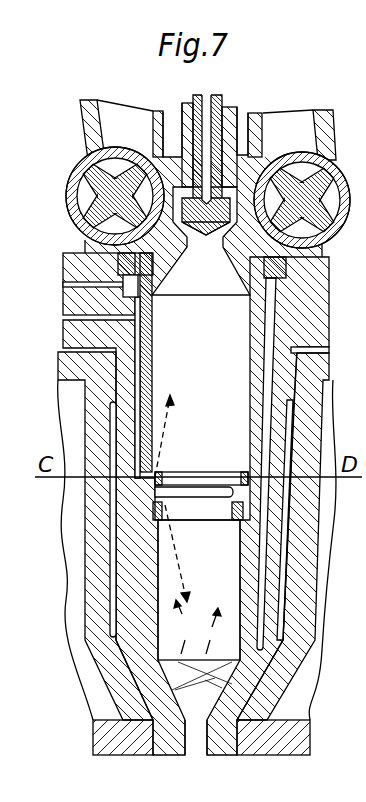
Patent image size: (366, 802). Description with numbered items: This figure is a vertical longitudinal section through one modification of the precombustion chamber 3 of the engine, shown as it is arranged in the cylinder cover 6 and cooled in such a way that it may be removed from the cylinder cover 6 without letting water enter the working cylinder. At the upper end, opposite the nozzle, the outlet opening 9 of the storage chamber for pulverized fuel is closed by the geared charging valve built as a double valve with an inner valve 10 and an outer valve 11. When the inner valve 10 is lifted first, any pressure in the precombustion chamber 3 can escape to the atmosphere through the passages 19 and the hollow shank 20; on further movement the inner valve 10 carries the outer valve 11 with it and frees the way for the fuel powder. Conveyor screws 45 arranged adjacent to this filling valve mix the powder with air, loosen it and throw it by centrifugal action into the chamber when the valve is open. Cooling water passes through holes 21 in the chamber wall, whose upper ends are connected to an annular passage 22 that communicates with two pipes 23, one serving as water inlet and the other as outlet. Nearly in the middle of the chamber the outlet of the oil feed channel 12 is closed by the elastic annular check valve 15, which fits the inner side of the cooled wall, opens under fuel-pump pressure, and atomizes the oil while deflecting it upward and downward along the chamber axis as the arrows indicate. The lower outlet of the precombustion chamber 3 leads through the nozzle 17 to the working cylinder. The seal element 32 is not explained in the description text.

The precombustion chamber 3 is at (172, 593).
The cylinder cover 6 is at (92, 567).
The outlet opening 9 is at (197, 258).
The inner valve 10 is at (186, 205).
The outer valve 11 is at (184, 108).
The channel 12 is at (144, 383).
The annular valve 15 is at (248, 488).
The nozzle 17 is at (196, 740).
The passages 19 is at (196, 189).
The hollow shank 20 is at (196, 98).
The holes 21 is at (272, 345).
The annular passage 22 is at (126, 283).
The pipes 23 is at (76, 287).
The seal plate 32 is at (149, 480).
The conveyor screws 45 is at (120, 213).